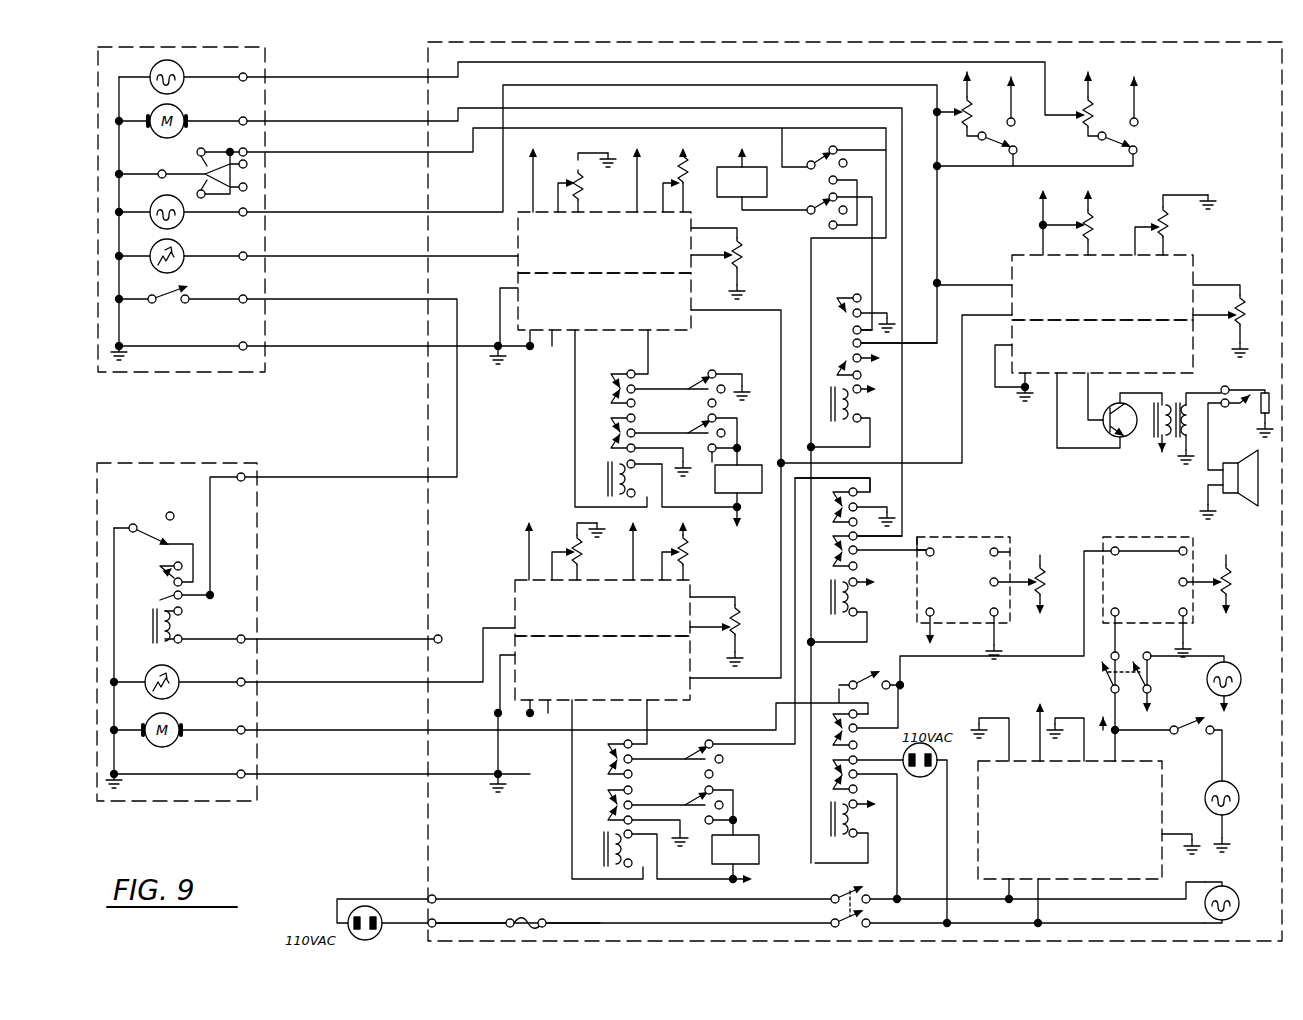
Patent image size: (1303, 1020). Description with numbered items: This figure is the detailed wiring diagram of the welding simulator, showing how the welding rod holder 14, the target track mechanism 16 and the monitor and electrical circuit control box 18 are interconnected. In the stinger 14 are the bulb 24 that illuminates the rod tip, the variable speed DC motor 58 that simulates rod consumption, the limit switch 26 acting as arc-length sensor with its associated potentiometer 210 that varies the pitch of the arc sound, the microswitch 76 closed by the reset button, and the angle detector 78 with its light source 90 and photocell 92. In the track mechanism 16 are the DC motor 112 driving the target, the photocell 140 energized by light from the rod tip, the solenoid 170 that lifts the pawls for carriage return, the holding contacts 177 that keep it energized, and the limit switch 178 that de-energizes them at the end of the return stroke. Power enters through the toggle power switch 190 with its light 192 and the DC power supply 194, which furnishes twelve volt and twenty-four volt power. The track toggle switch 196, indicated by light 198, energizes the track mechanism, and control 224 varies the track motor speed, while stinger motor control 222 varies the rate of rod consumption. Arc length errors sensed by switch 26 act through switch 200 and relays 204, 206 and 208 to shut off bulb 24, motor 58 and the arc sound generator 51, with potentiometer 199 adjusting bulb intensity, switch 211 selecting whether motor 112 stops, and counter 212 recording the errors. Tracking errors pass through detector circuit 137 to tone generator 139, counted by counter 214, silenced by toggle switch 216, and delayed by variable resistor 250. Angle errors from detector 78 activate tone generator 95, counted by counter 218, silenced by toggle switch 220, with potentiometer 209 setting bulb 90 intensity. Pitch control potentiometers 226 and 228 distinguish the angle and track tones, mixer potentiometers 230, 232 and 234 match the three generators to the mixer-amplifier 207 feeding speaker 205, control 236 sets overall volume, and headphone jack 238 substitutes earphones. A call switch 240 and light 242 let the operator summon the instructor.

The welding rod holder 14 is at (248, 386).
The target track mechanism 16 is at (262, 434).
The monitor and electrical circuit control box 18 is at (417, 831).
The bulb 24 is at (183, 67).
The limit switch 26 is at (201, 164).
The arc sound generator 51 is at (1181, 276).
The variable speed DC motor 58 is at (186, 117).
The microswitch 76 is at (158, 302).
The welding rod angle detector 78 is at (674, 247).
The light source 90 is at (183, 212).
The photocell 92 is at (185, 260).
The tone generator 95 is at (674, 300).
The DC motor 112 is at (175, 738).
The detector circuit 137 is at (677, 606).
The tone generator 139 is at (677, 666).
The photocell 140 is at (177, 687).
The solenoid 170 is at (182, 622).
The holding contacts 177 is at (165, 565).
The limit switch 178 is at (158, 523).
The toggle power switch 190 is at (854, 890).
The light 192 is at (1230, 899).
The DC power supply 194 is at (1154, 842).
The track toggle switch 196 is at (1147, 672).
The light 198 is at (1228, 678).
The potentiometer 199 is at (1084, 130).
The switch 200 is at (820, 146).
The relay 204 is at (876, 370).
The speaker 205 is at (1258, 499).
The relay 206 is at (863, 593).
The mixer-amplifier 207 is at (1186, 342).
The relay 208 is at (859, 796).
The potentiometer 209 is at (966, 130).
The potentiometer 210 is at (240, 175).
The switch 211 is at (868, 676).
The counter 212 is at (757, 194).
The counter 214 is at (747, 860).
The toggle switch 216 is at (695, 753).
The counter 218 is at (750, 490).
The toggle switch 220 is at (662, 418).
The stinger motor control 222 is at (1055, 548).
The control 224 is at (1237, 553).
The pitch control potentiometer 226 is at (671, 173).
The pitch control potentiometer 228 is at (685, 560).
The mixer potentiometer 230 is at (740, 263).
The mixer potentiometer 232 is at (736, 631).
The mixer potentiometer 234 is at (1154, 218).
The control 236 is at (1268, 270).
The headphone jack 238 is at (1262, 385).
The call switch 240 is at (1206, 734).
The light 242 is at (1230, 794).
The variable resistor 250 is at (586, 551).